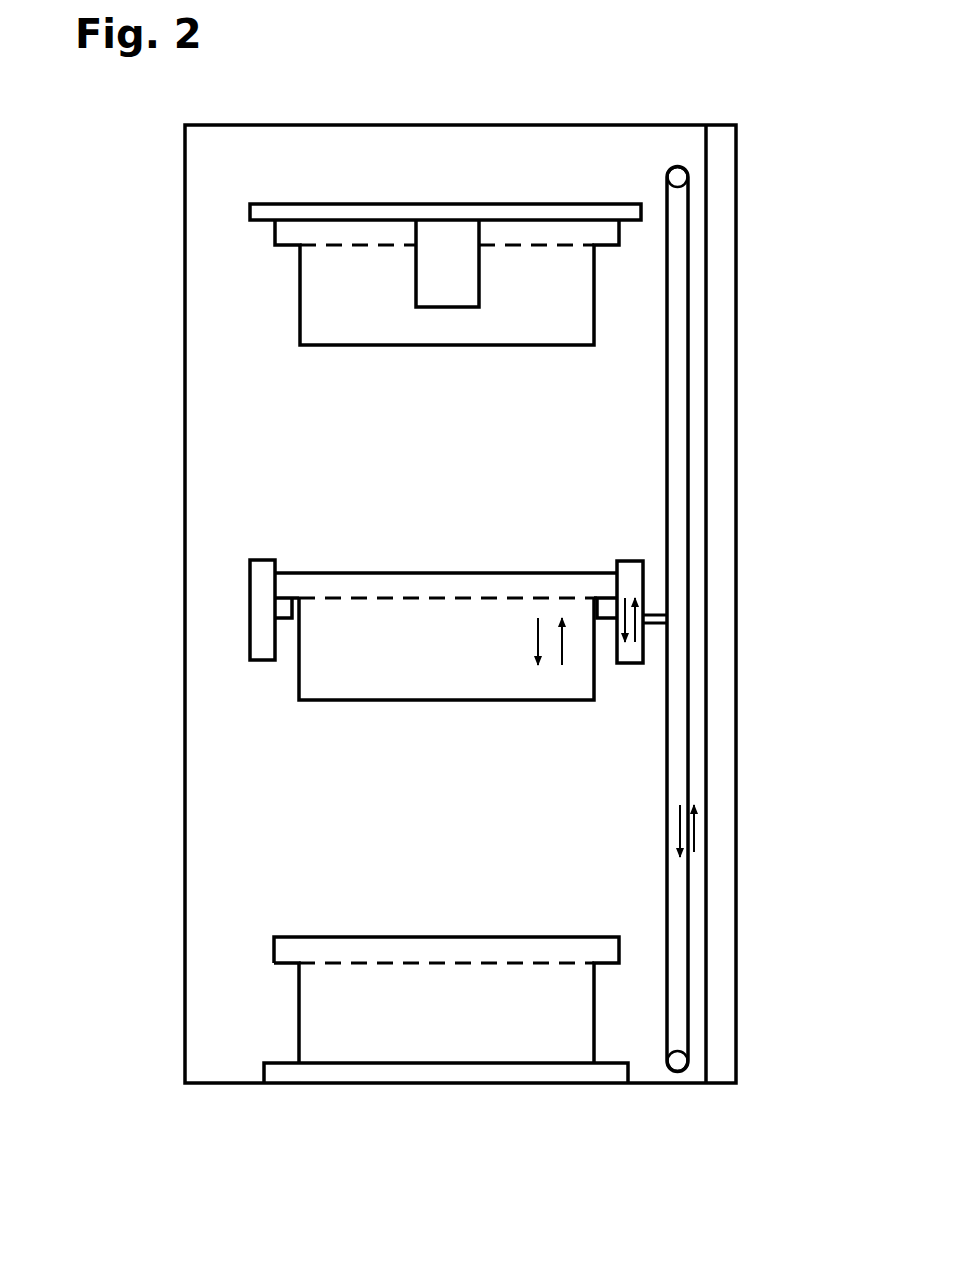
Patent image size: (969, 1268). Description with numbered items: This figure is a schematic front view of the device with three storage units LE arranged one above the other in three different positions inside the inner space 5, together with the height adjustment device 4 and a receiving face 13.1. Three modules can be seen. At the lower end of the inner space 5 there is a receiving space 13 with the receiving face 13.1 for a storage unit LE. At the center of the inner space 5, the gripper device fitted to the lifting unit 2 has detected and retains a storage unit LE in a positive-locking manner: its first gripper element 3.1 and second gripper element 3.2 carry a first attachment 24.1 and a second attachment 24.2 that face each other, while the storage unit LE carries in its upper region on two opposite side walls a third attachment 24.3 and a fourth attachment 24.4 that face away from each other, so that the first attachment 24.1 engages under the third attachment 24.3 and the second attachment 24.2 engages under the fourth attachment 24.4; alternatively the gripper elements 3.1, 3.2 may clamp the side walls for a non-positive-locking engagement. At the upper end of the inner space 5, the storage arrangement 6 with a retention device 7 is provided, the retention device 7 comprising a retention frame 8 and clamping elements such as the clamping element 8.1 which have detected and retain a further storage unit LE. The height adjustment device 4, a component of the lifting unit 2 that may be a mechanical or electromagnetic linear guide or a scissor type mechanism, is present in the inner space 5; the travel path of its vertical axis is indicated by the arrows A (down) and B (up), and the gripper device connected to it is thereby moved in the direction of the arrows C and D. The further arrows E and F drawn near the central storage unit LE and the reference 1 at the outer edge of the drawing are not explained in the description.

The housing frame 1 is at (737, 213).
The lifting unit 2 is at (461, 626).
The first gripper element 3.1 is at (263, 610).
The second gripper element 3.2 is at (645, 578).
The height adjustment device 4 is at (690, 468).
The inner space 5 is at (232, 840).
The storage arrangement 6 is at (372, 201).
The retention device 7 is at (410, 195).
The retention frame 8 is at (513, 215).
The clamping element 8.1 is at (435, 285).
The receiving space 13 is at (360, 1006).
The receiving face 13.1 is at (278, 1065).
The first attachment 24.1 is at (283, 622).
The second attachment 24.2 is at (610, 610).
The third attachment 24.3 is at (282, 585).
The fourth attachment 24.4 is at (617, 588).
The arrow A is at (667, 830).
The arrow B is at (700, 840).
The arrow C is at (615, 598).
The arrow D is at (645, 637).
The downward movement E is at (535, 634).
The upward movement F is at (565, 640).
The storage unit LE is at (318, 327).